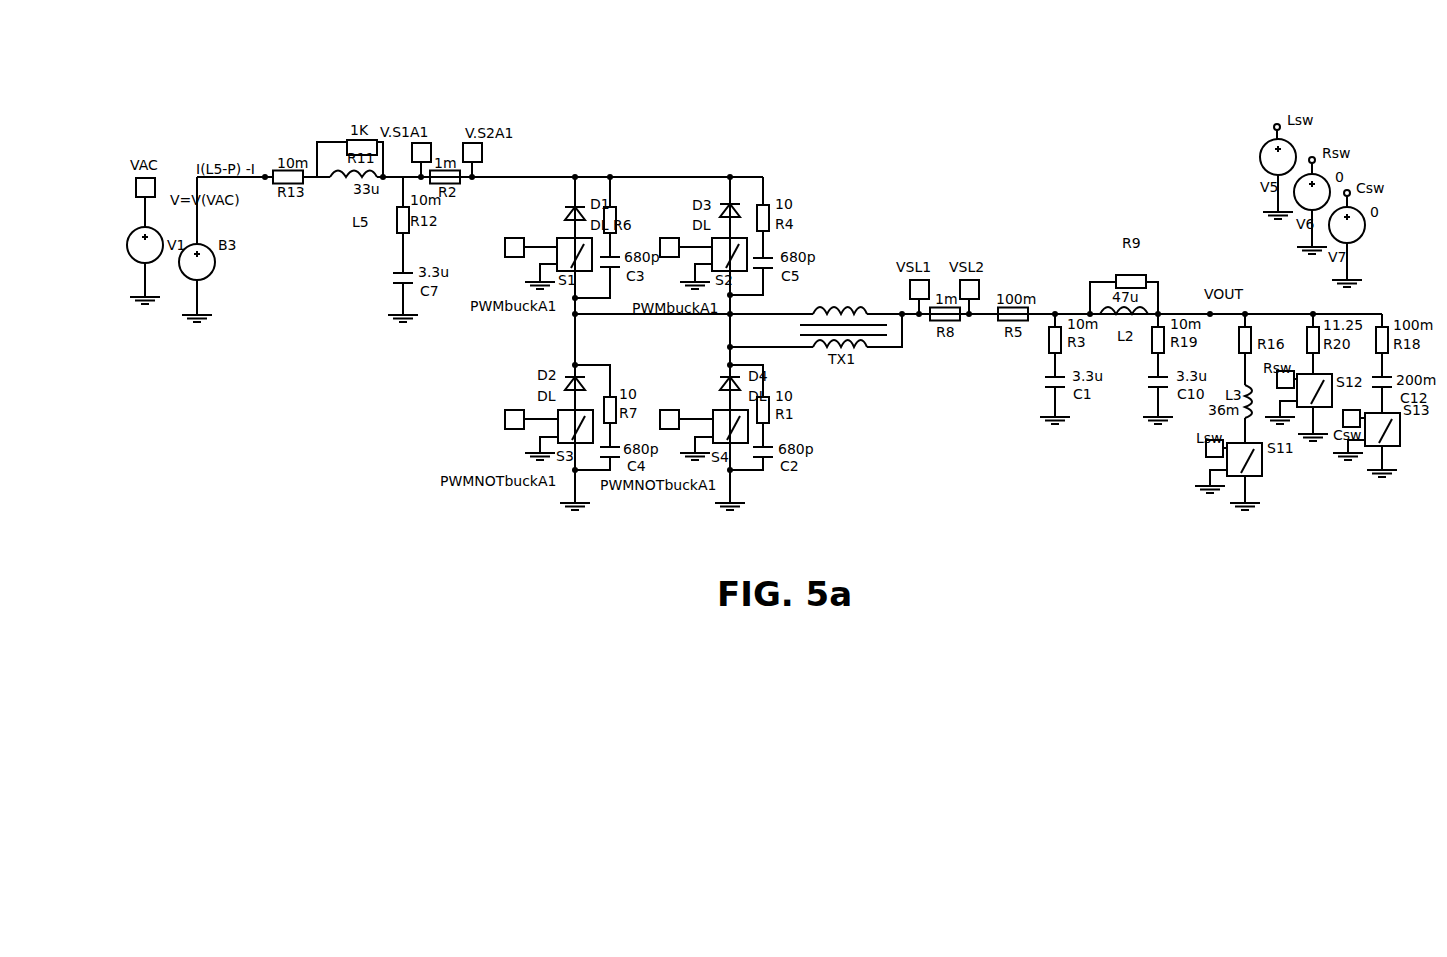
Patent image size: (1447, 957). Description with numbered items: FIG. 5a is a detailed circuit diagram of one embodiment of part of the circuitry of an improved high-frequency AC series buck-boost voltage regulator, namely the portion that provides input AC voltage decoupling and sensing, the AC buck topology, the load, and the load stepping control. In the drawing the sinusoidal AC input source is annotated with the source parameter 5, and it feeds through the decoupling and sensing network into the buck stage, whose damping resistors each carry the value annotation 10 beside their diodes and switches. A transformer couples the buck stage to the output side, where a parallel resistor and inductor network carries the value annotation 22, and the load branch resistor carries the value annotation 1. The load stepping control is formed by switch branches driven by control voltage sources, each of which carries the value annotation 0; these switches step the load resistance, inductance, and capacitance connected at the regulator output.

The voltage source V5 (Lsw control, value 0) 0 is at (1283, 171).
The resistor R16 (1 ohm) 1 is at (1252, 348).
The voltage source B3 with Sine parameters 5 is at (187, 264).
The resistor R6 (10 ohm) 10 is at (621, 215).
The resistor R9 (22 ohm) 22 is at (1122, 287).